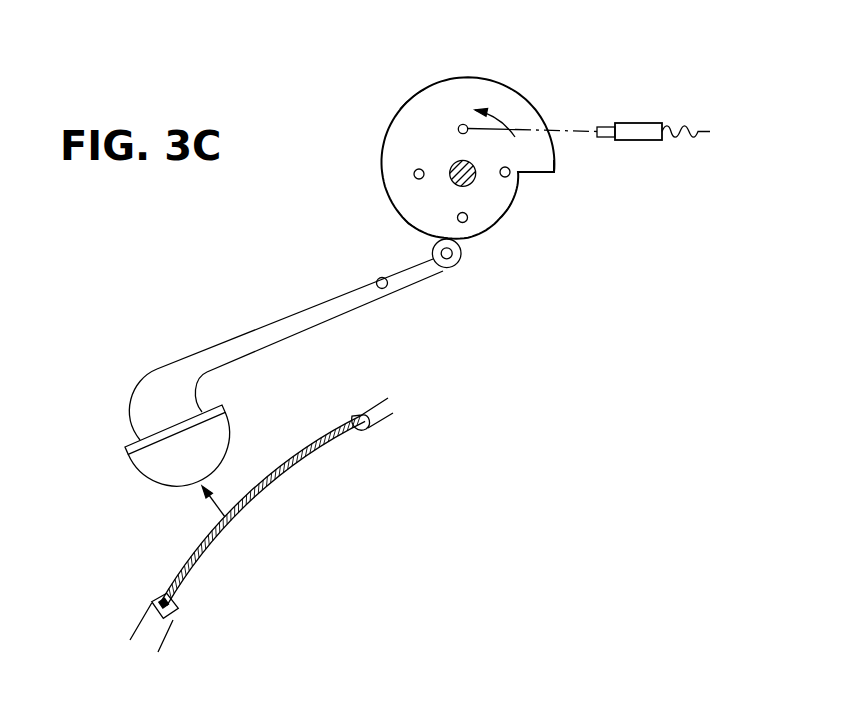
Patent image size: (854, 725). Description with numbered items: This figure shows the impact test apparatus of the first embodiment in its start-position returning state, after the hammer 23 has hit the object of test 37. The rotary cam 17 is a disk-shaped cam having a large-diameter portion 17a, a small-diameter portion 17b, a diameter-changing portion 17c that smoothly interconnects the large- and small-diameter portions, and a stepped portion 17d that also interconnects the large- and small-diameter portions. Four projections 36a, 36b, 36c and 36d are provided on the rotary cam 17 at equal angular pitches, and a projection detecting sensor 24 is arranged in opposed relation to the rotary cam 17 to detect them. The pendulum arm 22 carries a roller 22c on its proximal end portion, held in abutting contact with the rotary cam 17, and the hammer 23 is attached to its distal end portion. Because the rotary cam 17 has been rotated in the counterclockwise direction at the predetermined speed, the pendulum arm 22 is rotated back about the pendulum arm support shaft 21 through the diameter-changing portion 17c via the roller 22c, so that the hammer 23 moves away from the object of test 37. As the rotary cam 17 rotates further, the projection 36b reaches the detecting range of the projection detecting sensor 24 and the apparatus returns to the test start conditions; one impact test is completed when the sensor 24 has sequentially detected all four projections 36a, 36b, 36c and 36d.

The rotary cam 17 is at (407, 118).
The large-diameter portion 17a is at (413, 92).
The small-diameter portion 17b is at (507, 207).
The diameter-changing portion 17c is at (405, 225).
The stepped portion 17d is at (541, 176).
The projection 36a is at (508, 168).
The projection 36b is at (458, 217).
The projection 36c is at (415, 170).
The projection 36d is at (463, 123).
The pendulum arm support shaft 21 is at (388, 288).
The pendulum arm 22 is at (170, 383).
The roller 22c is at (455, 268).
The hammer 23 is at (168, 458).
The projection detecting sensor 24 is at (638, 135).
The object of test 37 is at (287, 477).